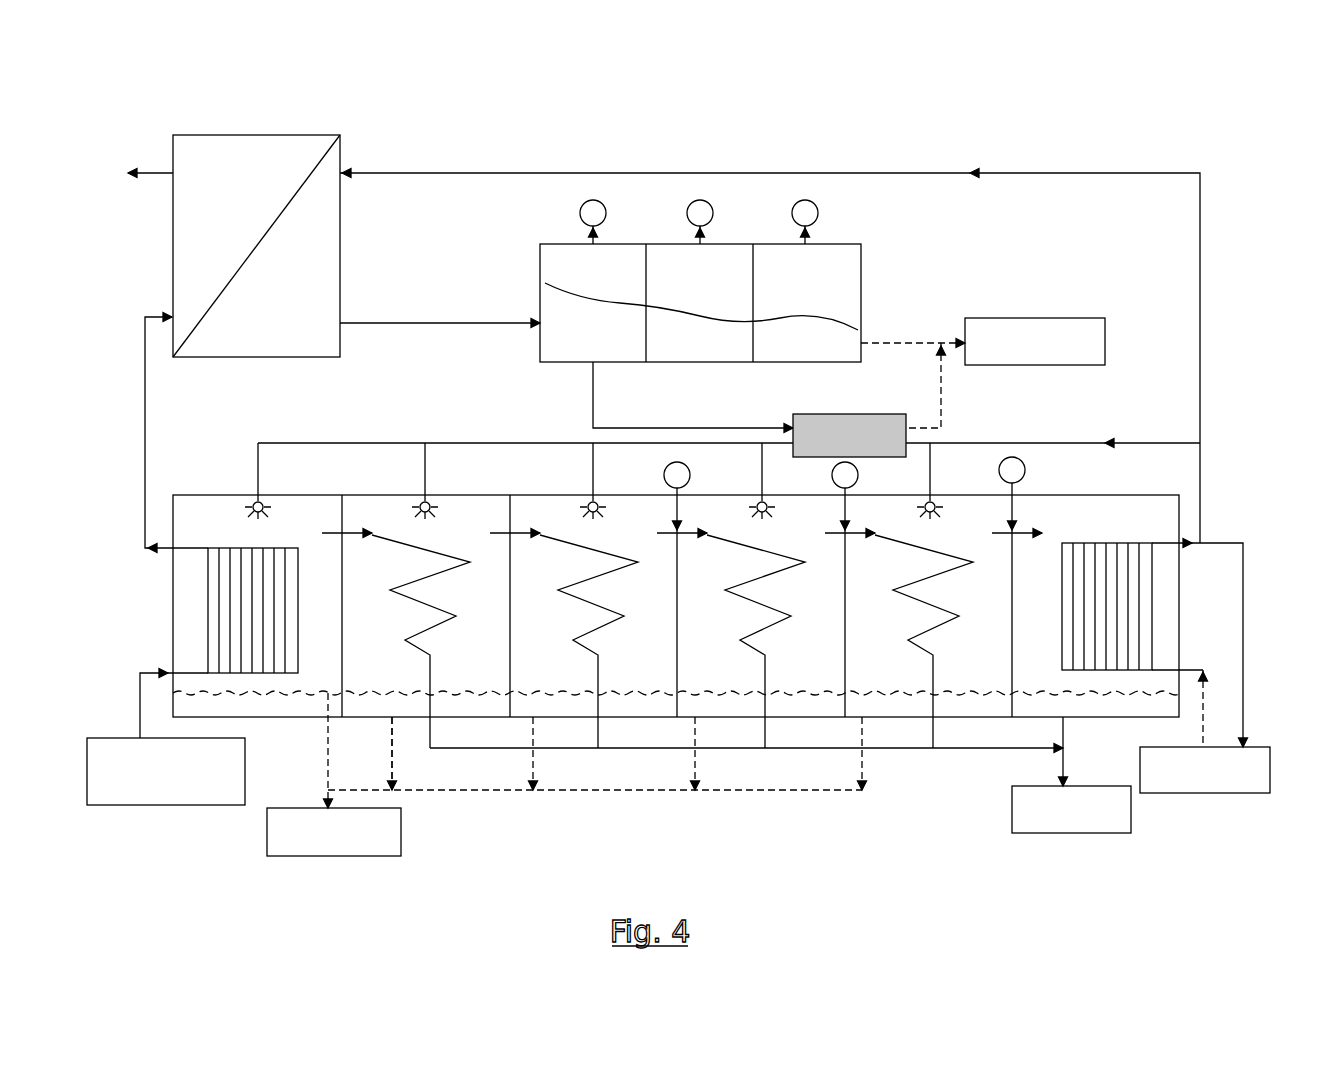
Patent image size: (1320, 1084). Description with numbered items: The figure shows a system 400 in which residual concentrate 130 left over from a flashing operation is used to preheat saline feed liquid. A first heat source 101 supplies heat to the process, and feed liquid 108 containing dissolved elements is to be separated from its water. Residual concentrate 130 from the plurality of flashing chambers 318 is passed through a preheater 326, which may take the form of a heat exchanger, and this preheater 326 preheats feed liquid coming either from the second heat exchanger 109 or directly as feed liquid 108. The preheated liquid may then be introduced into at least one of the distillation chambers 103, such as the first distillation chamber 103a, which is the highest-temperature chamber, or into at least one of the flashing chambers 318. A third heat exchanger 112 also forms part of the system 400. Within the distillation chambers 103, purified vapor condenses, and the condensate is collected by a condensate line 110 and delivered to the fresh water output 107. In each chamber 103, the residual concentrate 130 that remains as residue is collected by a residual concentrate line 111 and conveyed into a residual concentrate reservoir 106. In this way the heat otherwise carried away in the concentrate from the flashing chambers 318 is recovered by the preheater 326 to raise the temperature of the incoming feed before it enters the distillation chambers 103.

The water heating system 400 is at (705, 97).
The third heat exchanger 112 is at (242, 133).
The residual concentrate 130 is at (553, 305).
The flashing chambers 318 is at (620, 244).
The preheater 326 is at (847, 415).
The residual concentrate reservoir 106 is at (686, 587).
The distillation chambers 103 is at (373, 672).
The first distillation chamber 103a is at (189, 515).
The condensate line 110 is at (760, 750).
The second heat exchanger 109 is at (1158, 629).
The first heat source 101 is at (166, 771).
The fresh water output 107 is at (1071, 775).
The feed liquid 108 is at (1205, 770).
The residual concentrate line 111 is at (423, 793).